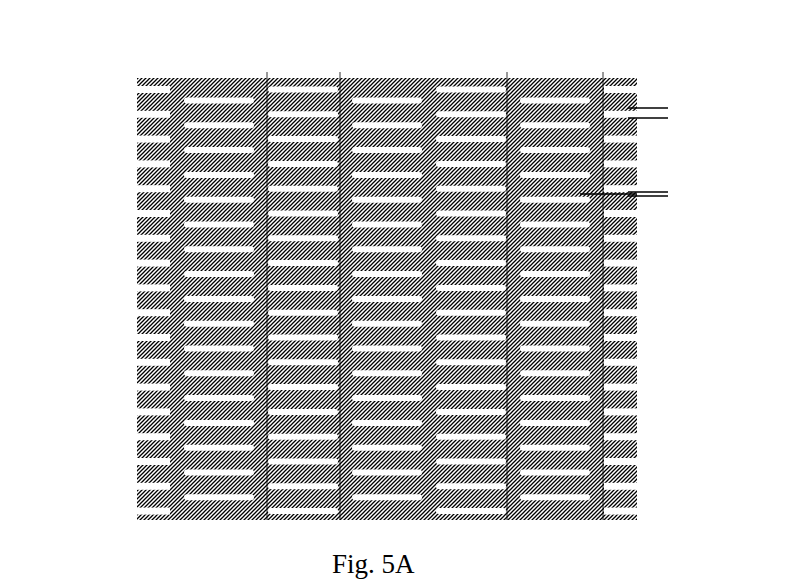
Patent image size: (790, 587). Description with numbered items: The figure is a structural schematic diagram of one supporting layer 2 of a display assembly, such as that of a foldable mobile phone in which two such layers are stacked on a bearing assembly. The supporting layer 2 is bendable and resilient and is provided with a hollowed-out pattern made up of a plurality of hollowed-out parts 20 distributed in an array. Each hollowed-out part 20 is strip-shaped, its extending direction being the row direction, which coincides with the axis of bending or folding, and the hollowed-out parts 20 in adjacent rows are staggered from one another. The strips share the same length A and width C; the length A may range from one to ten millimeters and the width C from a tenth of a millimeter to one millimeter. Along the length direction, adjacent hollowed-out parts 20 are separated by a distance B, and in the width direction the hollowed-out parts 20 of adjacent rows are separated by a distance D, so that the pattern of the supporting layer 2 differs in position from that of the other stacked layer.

The supporting layer 2 is at (343, 267).
The hollowed-out part 20 is at (470, 90).
The length of the hollowed-out part A is at (340, 69).
The distance between adjacent hollowed-out parts in the length direction B is at (603, 69).
The width of the hollowed-out part C is at (662, 90).
The distance between hollowed-out parts in adjacent rows in the width direction D is at (662, 173).